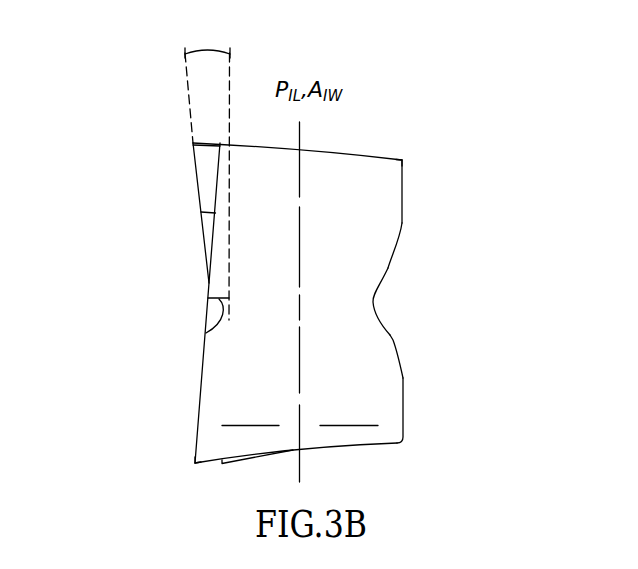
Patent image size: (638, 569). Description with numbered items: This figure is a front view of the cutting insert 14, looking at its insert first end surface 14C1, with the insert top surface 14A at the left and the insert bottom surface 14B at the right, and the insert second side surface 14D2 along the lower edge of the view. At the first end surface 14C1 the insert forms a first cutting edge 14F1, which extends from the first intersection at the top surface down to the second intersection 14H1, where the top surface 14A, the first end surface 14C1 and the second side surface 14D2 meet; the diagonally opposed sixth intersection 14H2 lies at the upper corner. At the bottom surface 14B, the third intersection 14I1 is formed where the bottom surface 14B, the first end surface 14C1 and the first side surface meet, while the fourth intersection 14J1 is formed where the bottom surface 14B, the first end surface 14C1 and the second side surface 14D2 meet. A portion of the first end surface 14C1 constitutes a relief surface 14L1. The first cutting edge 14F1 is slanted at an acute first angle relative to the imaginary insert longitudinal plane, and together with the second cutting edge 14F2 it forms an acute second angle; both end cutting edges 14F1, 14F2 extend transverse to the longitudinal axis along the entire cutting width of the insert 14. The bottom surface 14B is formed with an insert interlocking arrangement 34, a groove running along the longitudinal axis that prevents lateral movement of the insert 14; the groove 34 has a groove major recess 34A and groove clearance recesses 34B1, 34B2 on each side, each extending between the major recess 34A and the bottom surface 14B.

The cutting insert 14 is at (480, 128).
The insert top surface 14A is at (163, 282).
The insert bottom surface 14B is at (415, 194).
The insert first end surface 14C1 is at (349, 413).
The insert second side surface 14D2 is at (357, 455).
The first cutting edge 14F1 is at (199, 413).
The second cutting edge 14F2 is at (201, 212).
The second intersection 14H1 is at (195, 463).
The sixth intersection 14H2 is at (193, 145).
The third intersection 14I1 is at (402, 160).
The fourth intersection 14J1 is at (404, 442).
The relief surface 14L1 is at (250, 413).
The insert interlocking arrangement 34 is at (435, 333).
The groove major recess 34A is at (373, 302).
The groove clearance recess 34B1 is at (398, 241).
The groove clearance recess 34B2 is at (395, 358).